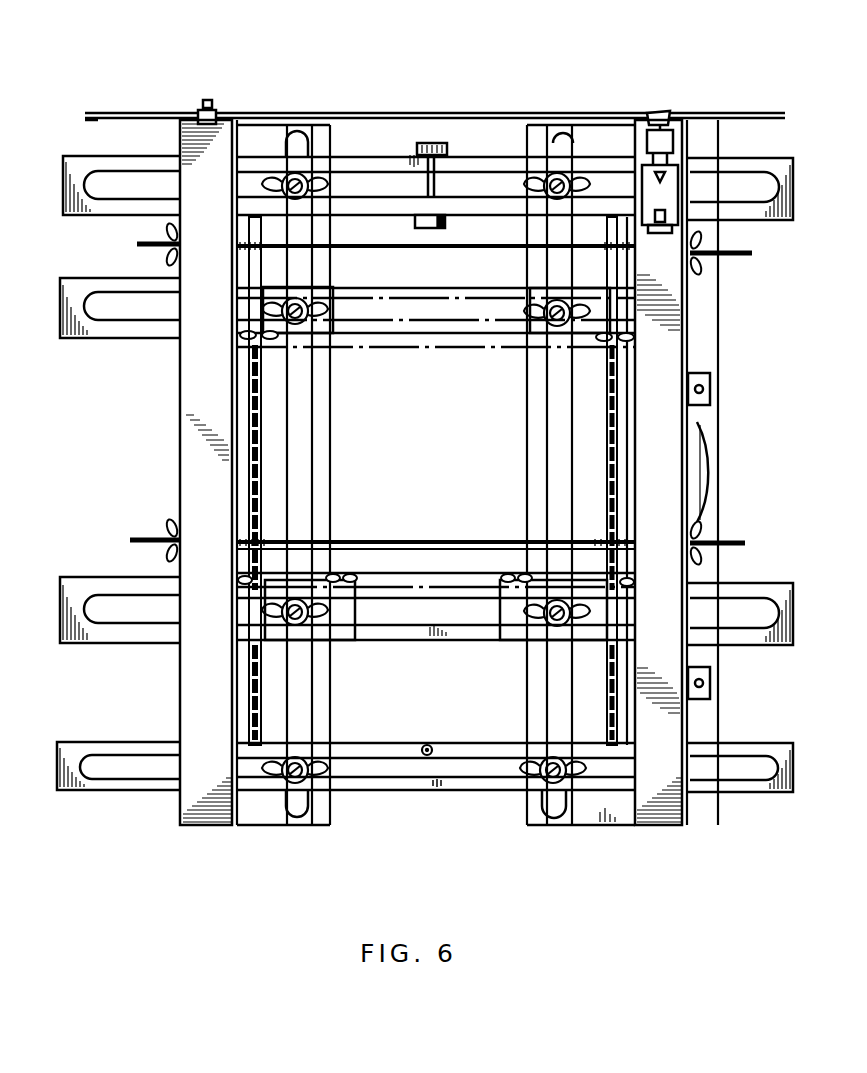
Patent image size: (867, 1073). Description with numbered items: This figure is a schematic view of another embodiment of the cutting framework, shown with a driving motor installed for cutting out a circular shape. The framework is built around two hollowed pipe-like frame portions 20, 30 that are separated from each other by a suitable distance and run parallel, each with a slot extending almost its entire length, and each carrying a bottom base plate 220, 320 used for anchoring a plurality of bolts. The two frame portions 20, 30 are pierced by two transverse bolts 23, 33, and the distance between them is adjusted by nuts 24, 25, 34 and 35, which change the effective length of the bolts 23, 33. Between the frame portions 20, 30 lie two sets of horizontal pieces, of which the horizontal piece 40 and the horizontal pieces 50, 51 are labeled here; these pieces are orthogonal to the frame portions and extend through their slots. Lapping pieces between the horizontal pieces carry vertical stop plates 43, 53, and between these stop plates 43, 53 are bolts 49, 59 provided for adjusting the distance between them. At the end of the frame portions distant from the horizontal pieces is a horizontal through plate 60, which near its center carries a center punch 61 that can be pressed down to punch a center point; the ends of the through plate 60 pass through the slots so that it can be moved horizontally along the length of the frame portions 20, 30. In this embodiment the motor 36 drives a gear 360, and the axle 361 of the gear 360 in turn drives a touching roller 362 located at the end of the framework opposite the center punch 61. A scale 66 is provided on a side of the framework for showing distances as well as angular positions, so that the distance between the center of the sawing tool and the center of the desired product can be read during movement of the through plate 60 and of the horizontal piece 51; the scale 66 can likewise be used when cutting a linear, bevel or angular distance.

The frame portion 20 is at (196, 697).
The frame portion 30 is at (676, 713).
The horizontal piece 40 is at (82, 290).
The horizontal piece 50 is at (90, 588).
The horizontal through plate 60 is at (86, 748).
The center punch 61 is at (428, 745).
The horizontal piece 51 is at (770, 592).
The transverse bolt 33 is at (376, 248).
The nut 34 is at (702, 236).
The nut 35 is at (170, 258).
The motor 36 is at (672, 180).
The gear 360 is at (432, 142).
The axle 361 is at (437, 176).
The touching roller 362 is at (422, 217).
The vertical stop plate 43 is at (332, 346).
The bolt 49 is at (250, 400).
The bolt 59 is at (620, 410).
The scale 66 is at (706, 432).
The transverse bolt 23 is at (418, 541).
The nut 24 is at (700, 532).
The nut 25 is at (175, 535).
The vertical stop plate 53 is at (340, 574).
The bottom base plate 220 is at (300, 826).
The bottom base plate 320 is at (600, 822).